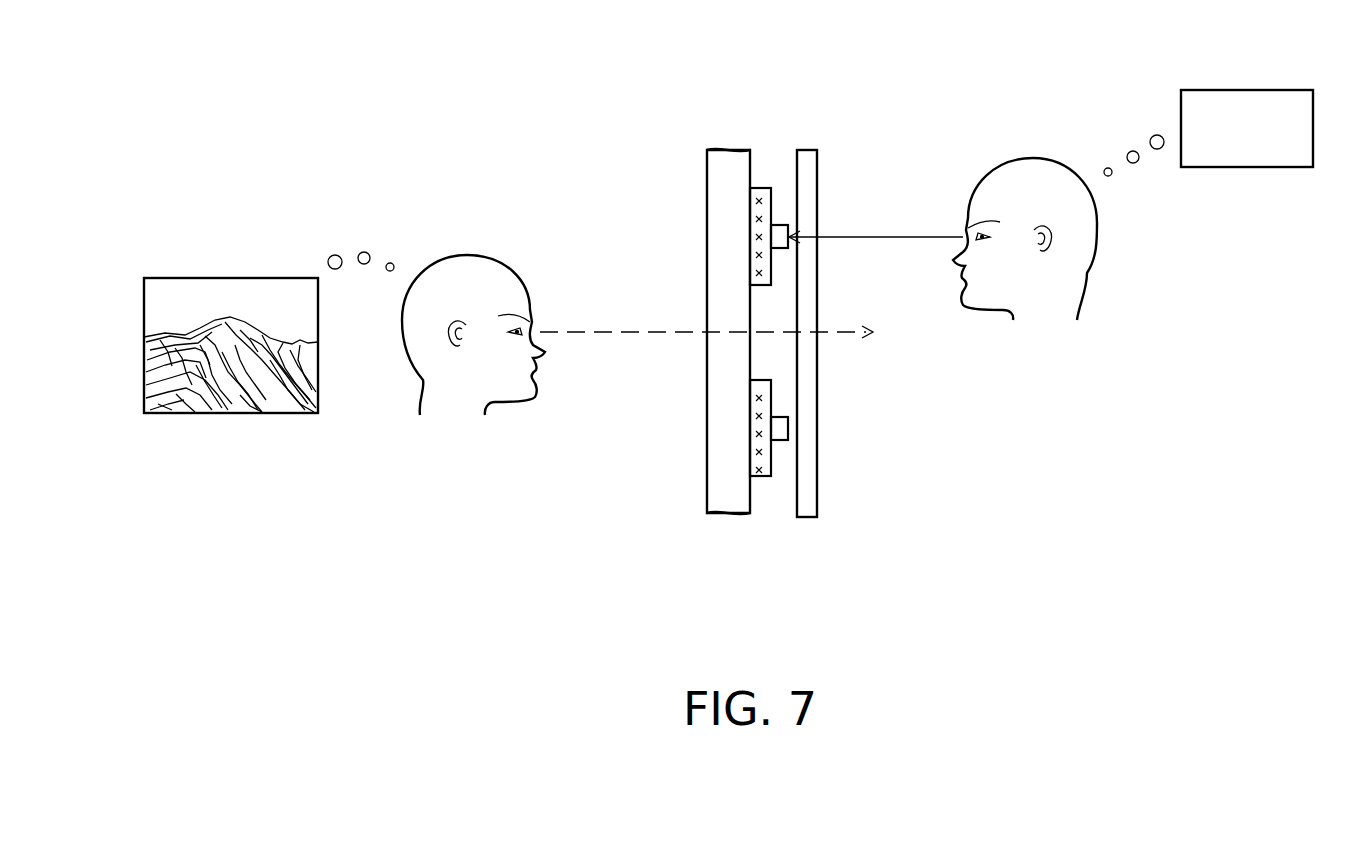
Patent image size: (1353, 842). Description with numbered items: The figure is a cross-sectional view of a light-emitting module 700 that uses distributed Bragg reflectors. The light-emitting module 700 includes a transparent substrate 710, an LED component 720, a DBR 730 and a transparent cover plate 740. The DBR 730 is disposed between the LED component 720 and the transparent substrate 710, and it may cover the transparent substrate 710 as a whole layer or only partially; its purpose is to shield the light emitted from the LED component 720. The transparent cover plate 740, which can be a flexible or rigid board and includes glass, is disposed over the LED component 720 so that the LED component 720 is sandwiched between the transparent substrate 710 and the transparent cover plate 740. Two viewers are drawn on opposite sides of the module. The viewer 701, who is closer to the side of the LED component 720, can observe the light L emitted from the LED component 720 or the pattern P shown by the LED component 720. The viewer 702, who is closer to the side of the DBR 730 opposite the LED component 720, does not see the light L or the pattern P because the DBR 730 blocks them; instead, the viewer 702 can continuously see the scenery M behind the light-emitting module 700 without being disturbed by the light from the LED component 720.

The light-emitting module 700 is at (256, 50).
The viewer 701 is at (1033, 158).
The viewer 702 is at (467, 255).
The transparent substrate 710 is at (718, 472).
The LED component 720 is at (781, 427).
The DBR 730 is at (762, 472).
The transparent cover plate 740 is at (806, 470).
The scenery M is at (230, 278).
The pattern P is at (1245, 90).
The light L is at (790, 245).